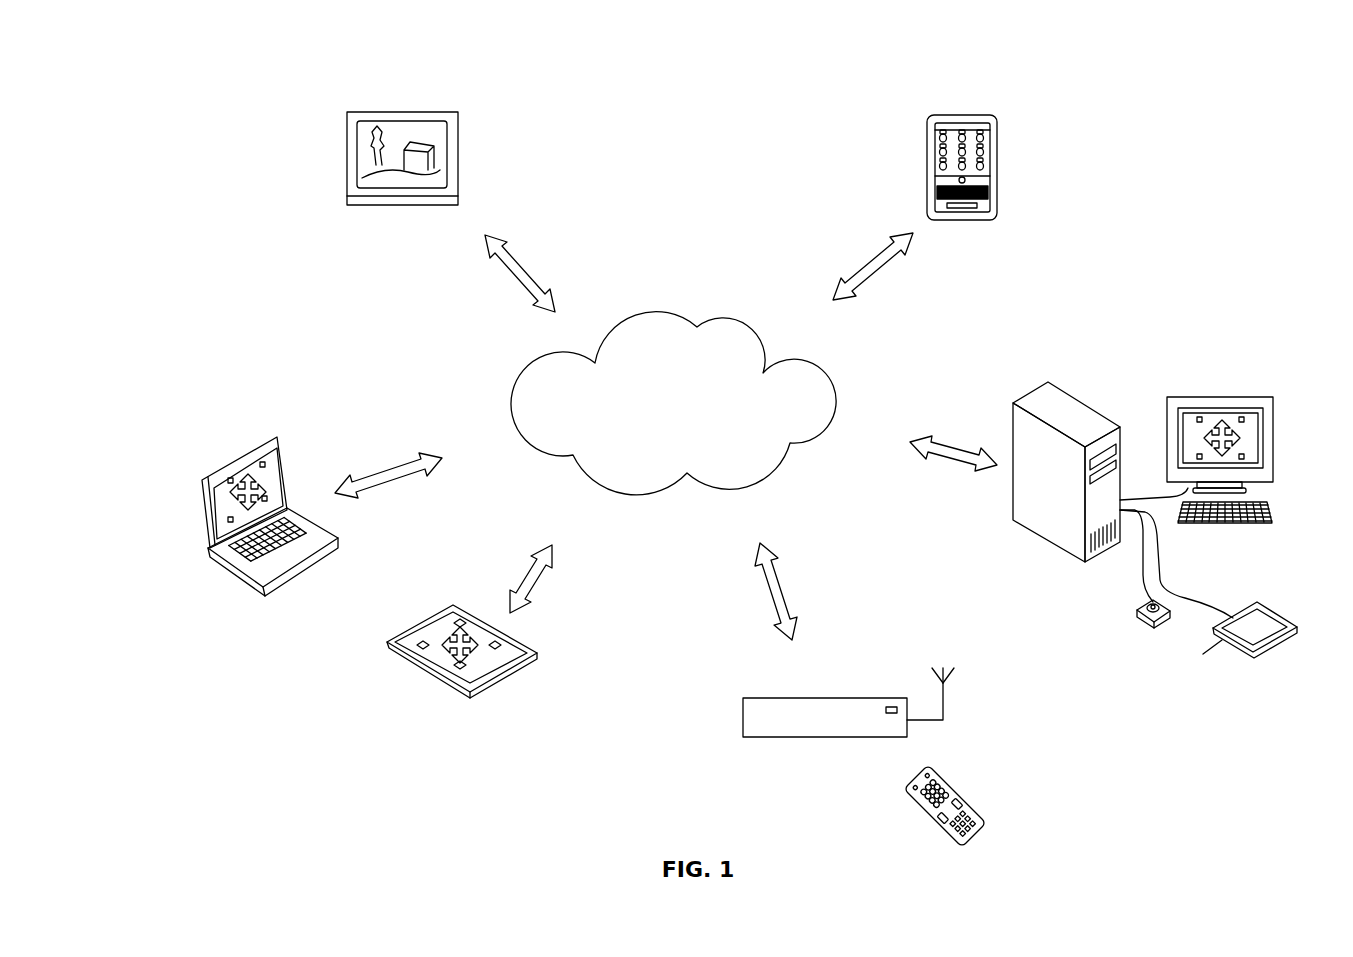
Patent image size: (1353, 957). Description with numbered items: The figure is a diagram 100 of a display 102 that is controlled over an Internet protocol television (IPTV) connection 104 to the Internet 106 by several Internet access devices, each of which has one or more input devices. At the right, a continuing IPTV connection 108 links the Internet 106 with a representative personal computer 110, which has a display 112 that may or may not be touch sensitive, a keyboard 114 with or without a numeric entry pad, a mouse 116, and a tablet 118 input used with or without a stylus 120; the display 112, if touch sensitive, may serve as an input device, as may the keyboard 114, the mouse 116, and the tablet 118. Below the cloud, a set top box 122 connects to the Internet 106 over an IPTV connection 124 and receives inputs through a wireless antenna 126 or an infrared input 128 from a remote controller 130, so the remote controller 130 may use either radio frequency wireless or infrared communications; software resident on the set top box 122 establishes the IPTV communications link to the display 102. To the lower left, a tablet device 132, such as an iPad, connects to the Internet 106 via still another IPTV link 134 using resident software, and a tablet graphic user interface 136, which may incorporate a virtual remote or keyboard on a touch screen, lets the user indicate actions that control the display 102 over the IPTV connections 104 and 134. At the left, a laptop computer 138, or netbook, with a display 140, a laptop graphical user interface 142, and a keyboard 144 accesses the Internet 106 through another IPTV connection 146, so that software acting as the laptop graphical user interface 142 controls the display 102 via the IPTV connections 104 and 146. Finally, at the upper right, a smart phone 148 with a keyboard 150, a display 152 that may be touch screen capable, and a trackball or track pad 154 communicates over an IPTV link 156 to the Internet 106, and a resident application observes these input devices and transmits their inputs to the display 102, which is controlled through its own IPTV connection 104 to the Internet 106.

The diagram 100 is at (170, 114).
The display 102 is at (428, 112).
The IPTV connection 104 is at (510, 278).
The Internet 106 is at (692, 369).
The continuing IPTV connection 108 is at (960, 466).
The personal computer 110 is at (1065, 395).
The display 112 is at (1212, 396).
The keyboard 114 is at (1232, 526).
The mouse 116 is at (1140, 614).
The tablet 118 is at (1267, 647).
The stylus 120 is at (1205, 652).
The set top box 122 is at (846, 697).
The IPTV connection 124 is at (768, 600).
The wireless antenna 126 is at (946, 705).
The infrared input 128 is at (890, 706).
The remote controller 130 is at (960, 790).
The tablet device 132 is at (429, 665).
The IPTV link 134 is at (538, 592).
The tablet graphic user interface 136 is at (398, 650).
The laptop computer 138 is at (269, 524).
The display 140 is at (230, 470).
The laptop graphical user interface 142 is at (212, 524).
The keyboard 144 is at (302, 538).
The IPTV connection 146 is at (385, 490).
The smart phone 148 is at (961, 169).
The keyboard 150 is at (975, 205).
The display 152 is at (962, 130).
The trackball or track pad 154 is at (970, 180).
The IPTV link 156 is at (875, 262).